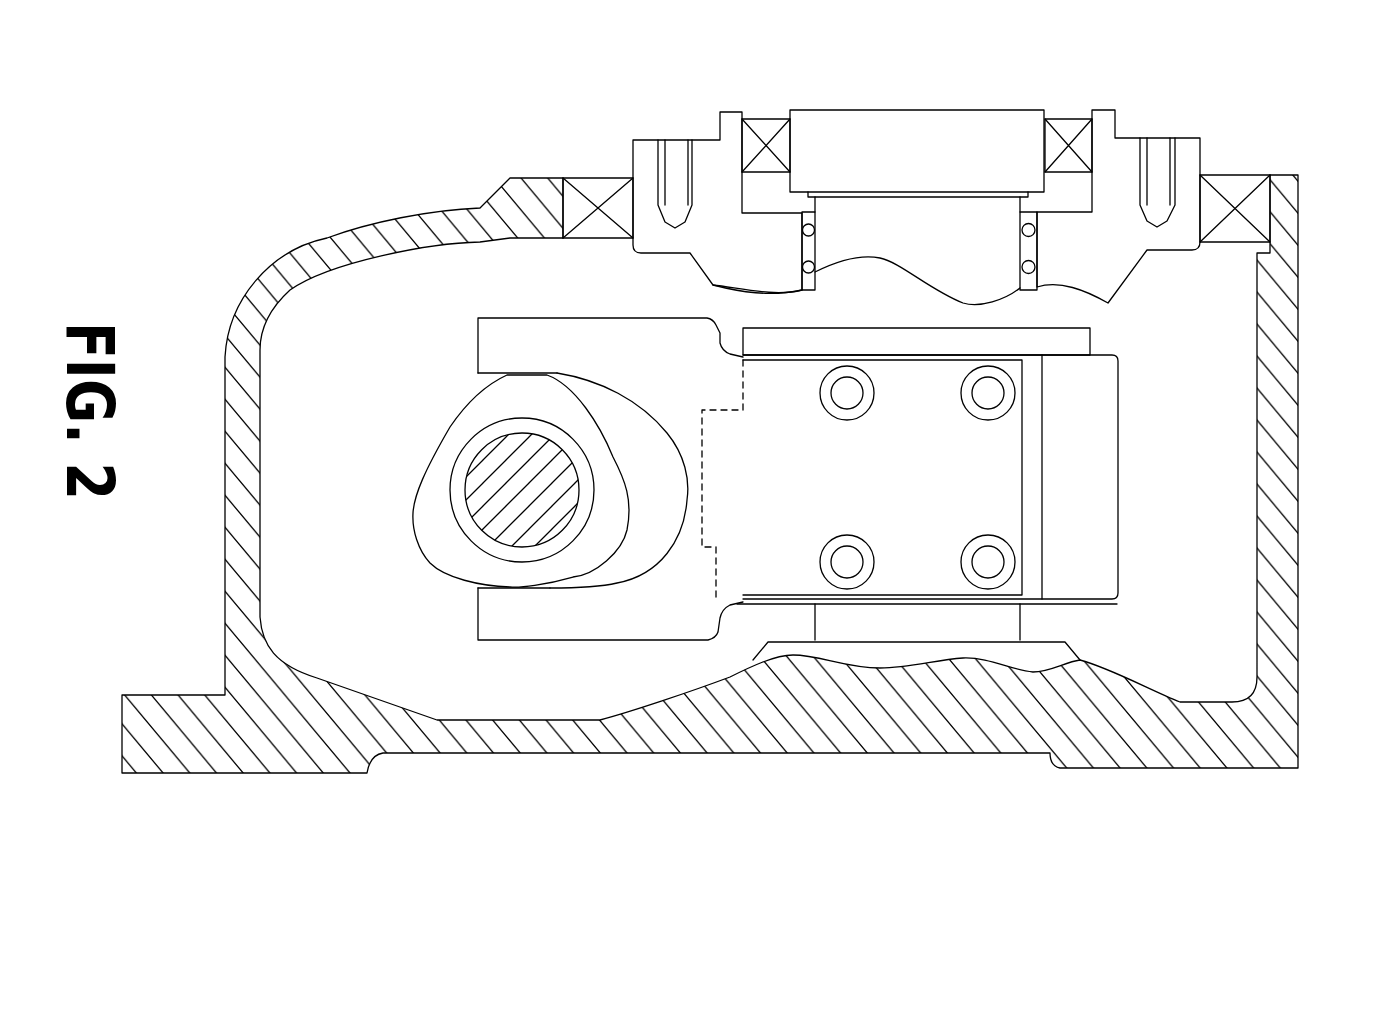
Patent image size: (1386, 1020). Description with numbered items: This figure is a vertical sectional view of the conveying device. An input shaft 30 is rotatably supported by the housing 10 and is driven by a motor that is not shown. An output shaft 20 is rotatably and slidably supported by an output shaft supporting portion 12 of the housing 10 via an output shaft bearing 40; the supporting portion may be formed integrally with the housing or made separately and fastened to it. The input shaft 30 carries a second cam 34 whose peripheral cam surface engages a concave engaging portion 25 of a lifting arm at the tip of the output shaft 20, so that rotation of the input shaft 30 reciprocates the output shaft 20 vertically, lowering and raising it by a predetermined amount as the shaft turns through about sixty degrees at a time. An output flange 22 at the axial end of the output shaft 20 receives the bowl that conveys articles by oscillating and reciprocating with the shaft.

The housing 10 is at (233, 434).
The output shaft supporting portion 12 is at (880, 228).
The output shaft 20 is at (1103, 493).
The output flange 22 is at (1187, 155).
The engaging portion 25 is at (610, 580).
The input shaft 30 is at (527, 513).
The second cam 34 is at (433, 535).
The output shaft bearing 40 is at (1038, 262).